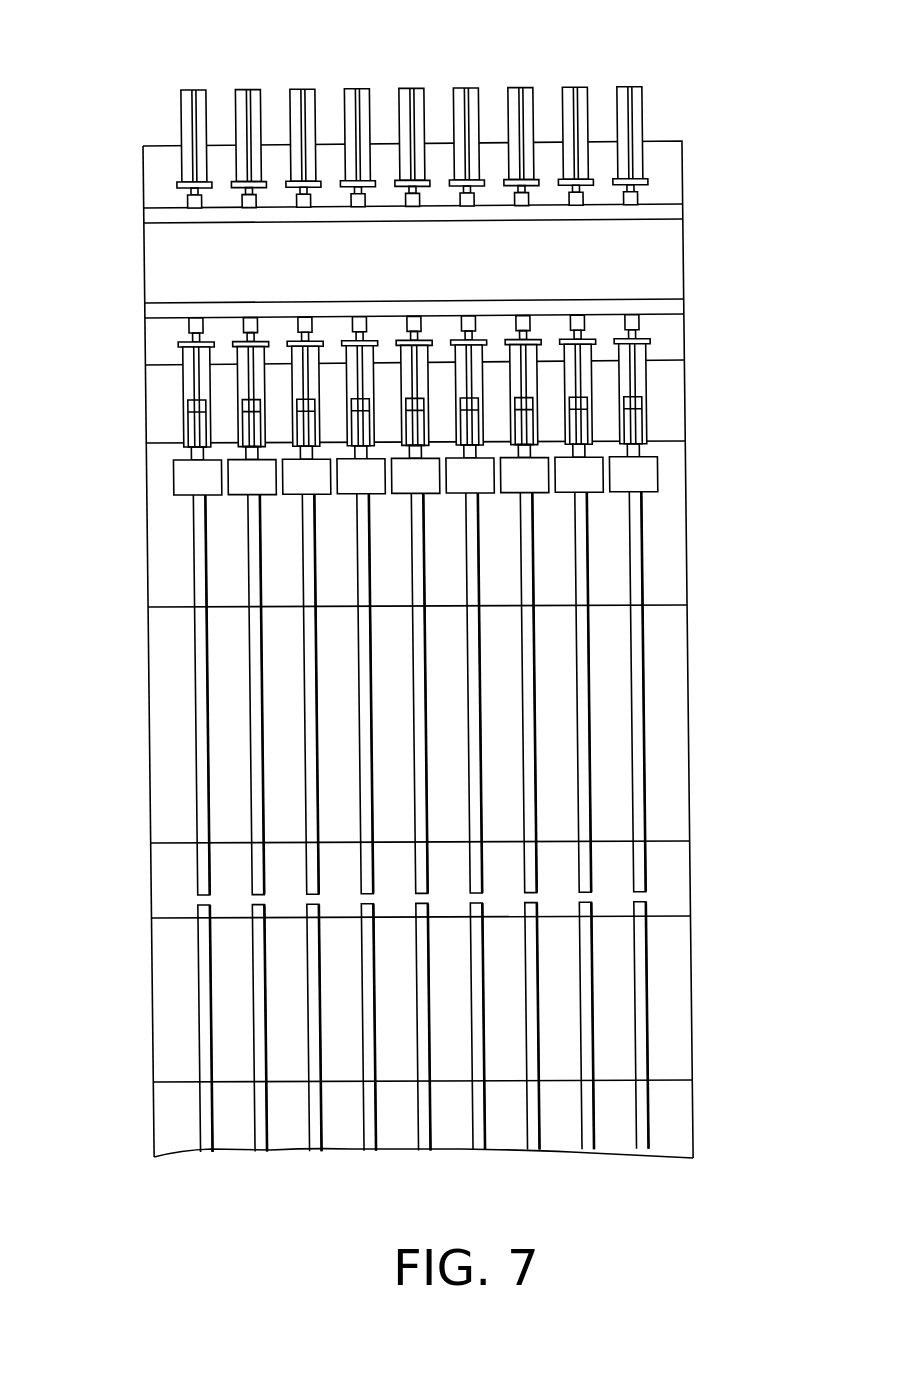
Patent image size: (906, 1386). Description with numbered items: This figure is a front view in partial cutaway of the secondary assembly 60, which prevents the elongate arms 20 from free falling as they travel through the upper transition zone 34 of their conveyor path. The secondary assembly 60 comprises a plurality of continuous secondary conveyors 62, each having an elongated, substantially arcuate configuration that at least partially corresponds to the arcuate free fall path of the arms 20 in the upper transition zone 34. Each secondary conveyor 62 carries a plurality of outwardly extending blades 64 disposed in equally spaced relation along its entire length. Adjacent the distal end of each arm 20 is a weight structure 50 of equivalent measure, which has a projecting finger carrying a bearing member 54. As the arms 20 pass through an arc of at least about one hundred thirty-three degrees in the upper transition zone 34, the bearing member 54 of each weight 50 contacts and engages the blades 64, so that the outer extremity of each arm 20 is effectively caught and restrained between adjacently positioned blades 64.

The elongate arm 20 is at (585, 728).
The upper transition zone 34 is at (138, 888).
The weight structure 50 is at (582, 478).
The bearing member 54 is at (583, 406).
The secondary assembly 60 is at (711, 134).
The secondary conveyor 62 is at (673, 212).
The blade 64 is at (580, 91).